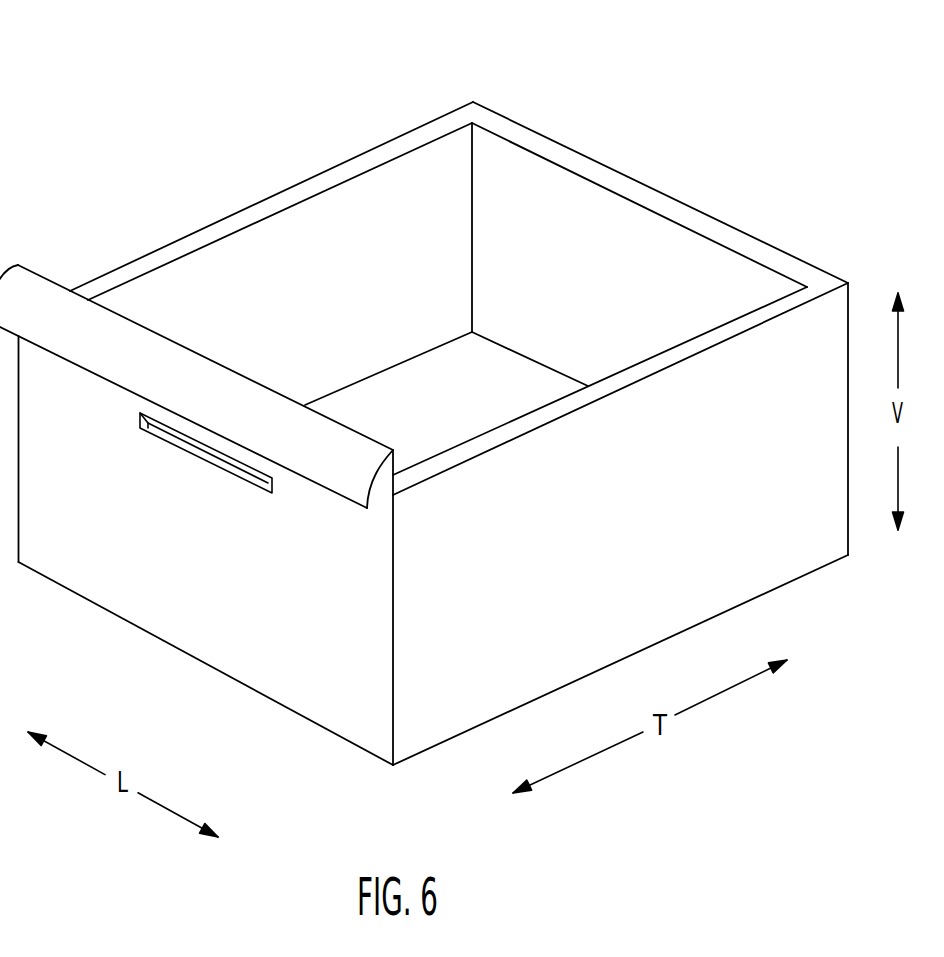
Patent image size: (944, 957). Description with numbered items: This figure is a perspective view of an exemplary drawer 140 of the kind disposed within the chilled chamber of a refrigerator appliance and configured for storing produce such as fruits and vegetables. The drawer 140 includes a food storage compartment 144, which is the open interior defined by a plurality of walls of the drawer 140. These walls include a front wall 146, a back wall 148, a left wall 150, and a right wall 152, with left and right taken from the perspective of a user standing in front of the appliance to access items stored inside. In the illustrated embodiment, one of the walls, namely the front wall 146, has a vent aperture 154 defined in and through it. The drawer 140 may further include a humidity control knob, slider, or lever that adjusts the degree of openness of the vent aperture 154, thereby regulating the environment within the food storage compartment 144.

The drawer 140 is at (215, 102).
The food storage compartment 144 is at (573, 230).
The front wall 146 is at (220, 618).
The back wall 148 is at (727, 237).
The left wall 150 is at (338, 303).
The right wall 152 is at (645, 532).
The vent aperture 154 is at (173, 435).